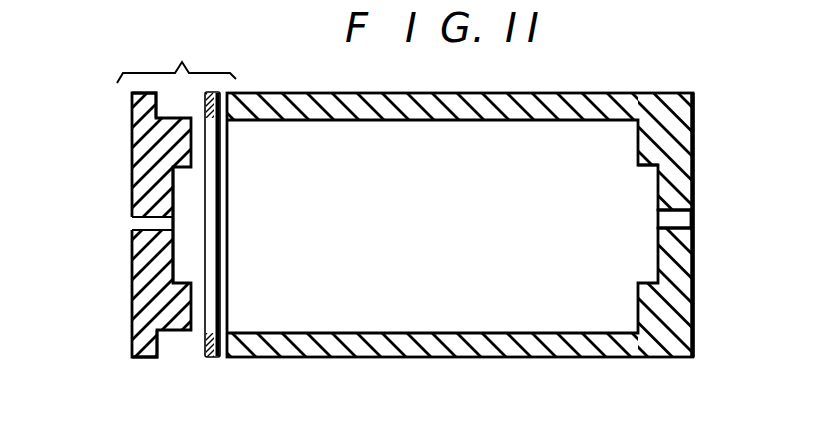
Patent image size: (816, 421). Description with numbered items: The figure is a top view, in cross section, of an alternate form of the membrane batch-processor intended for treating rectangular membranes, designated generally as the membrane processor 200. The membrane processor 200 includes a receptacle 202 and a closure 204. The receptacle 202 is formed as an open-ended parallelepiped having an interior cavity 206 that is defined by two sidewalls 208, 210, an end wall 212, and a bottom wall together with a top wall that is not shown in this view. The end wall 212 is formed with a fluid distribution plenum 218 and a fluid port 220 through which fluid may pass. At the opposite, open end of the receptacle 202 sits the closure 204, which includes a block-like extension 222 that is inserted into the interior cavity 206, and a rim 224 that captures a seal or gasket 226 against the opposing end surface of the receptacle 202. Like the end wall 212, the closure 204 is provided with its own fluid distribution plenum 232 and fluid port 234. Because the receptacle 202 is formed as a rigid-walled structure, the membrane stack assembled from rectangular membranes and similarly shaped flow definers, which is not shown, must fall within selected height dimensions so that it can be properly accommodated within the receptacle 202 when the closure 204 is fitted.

The membrane processor 200 is at (596, 72).
The receptacle 202 is at (511, 234).
The closure 204 is at (161, 236).
The interior cavity 206 is at (394, 146).
The sidewall 208 is at (286, 93).
The sidewall 210 is at (567, 358).
The end wall 212 is at (680, 317).
The fluid distribution plenum 218 is at (647, 188).
The fluid port 220 is at (677, 218).
The block-like extension 222 is at (165, 108).
The rim 224 is at (143, 358).
The seal or gasket 226 is at (210, 357).
The fluid distribution plenum 232 is at (182, 188).
The fluid port 234 is at (142, 223).